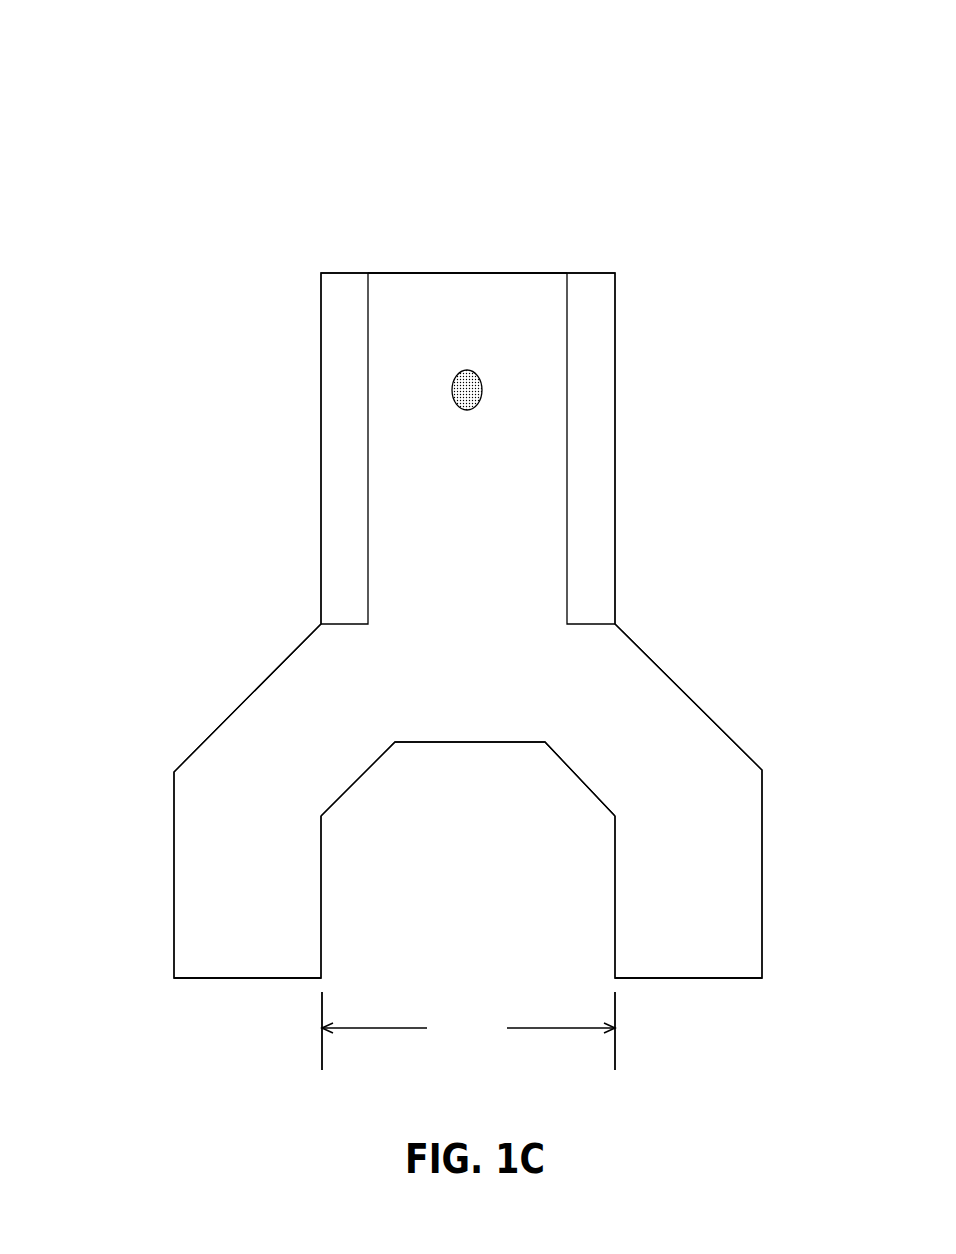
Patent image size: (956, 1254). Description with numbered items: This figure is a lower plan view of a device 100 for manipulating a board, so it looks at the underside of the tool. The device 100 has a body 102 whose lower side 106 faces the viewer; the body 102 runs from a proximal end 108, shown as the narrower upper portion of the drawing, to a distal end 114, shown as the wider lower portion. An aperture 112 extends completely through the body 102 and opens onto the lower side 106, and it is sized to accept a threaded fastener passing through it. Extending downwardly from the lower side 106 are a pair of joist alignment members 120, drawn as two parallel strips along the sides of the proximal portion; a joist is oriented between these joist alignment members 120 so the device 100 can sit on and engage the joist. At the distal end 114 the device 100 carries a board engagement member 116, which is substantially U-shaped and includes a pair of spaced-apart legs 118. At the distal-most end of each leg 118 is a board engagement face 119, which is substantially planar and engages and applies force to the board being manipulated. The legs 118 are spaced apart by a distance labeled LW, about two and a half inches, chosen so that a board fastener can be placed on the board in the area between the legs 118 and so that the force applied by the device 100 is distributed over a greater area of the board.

The device 100 is at (325, 138).
The body 102 is at (662, 432).
The lower side 106 is at (522, 296).
The proximal end 108 is at (573, 205).
The aperture 112 is at (465, 378).
The distal end 114 is at (785, 715).
The board engagement member 116 is at (133, 930).
The leg 118 is at (310, 943).
The board engagement face 119 is at (211, 978).
The joist alignment member 120 is at (577, 577).